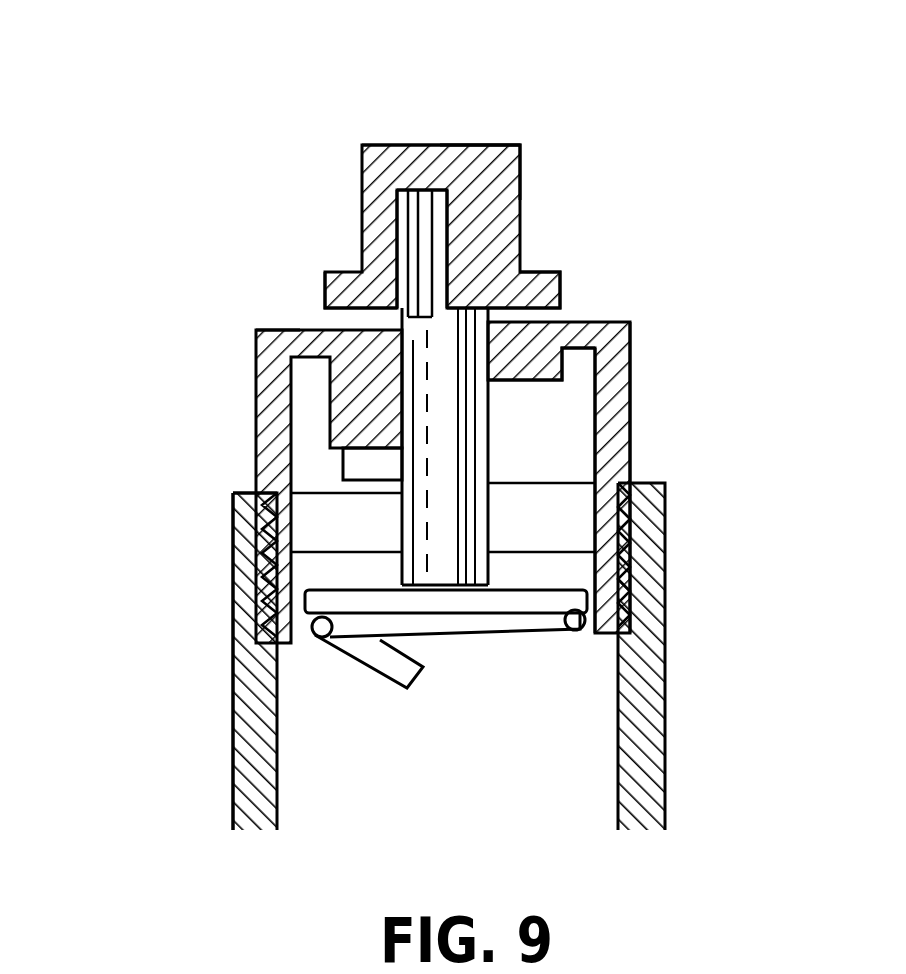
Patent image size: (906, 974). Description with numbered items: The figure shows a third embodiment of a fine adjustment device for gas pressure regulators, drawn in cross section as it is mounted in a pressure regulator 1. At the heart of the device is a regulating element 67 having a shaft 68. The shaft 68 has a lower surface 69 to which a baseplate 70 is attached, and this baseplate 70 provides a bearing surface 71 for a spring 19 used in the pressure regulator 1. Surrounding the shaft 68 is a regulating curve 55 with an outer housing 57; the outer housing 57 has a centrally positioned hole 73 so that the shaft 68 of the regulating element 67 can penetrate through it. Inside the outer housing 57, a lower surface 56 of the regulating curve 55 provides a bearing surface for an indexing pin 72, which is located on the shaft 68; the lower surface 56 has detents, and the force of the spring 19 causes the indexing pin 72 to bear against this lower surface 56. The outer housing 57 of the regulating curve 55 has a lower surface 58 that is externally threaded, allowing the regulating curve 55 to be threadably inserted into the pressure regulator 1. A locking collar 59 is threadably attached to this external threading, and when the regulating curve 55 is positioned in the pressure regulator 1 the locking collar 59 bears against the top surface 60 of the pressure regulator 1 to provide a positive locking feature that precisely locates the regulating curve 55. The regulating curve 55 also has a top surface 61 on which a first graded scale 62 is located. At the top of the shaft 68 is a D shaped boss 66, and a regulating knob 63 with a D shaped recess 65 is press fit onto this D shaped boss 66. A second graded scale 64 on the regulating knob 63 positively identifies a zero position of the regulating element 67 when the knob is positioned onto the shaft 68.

The pressure regulator 1 is at (668, 707).
The spring 19 is at (400, 667).
The regulating curve 55 is at (258, 360).
The lower surface 56 is at (533, 385).
The outer housing 57 is at (630, 358).
The lower surface 58 is at (667, 557).
The locking collar 59 is at (233, 508).
The top surface 60 is at (233, 560).
The top surface 61 is at (340, 276).
The first graded scale 62 is at (590, 322).
The regulating knob 63 is at (425, 140).
The second graded scale 64 is at (362, 178).
The D shaped recess 65 is at (470, 145).
The D shaped boss 66 is at (457, 183).
The regulating element 67 is at (520, 587).
The shaft 68 is at (262, 330).
The lower surface 69 is at (390, 583).
The baseplate 70 is at (507, 593).
The bearing surface 71 is at (592, 598).
The indexing pin 72 is at (345, 462).
The centrally positioned hole 73 is at (560, 280).